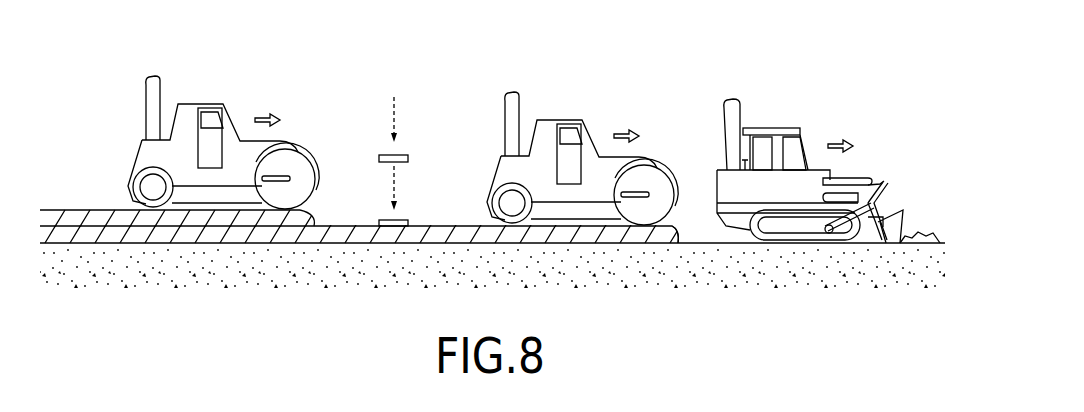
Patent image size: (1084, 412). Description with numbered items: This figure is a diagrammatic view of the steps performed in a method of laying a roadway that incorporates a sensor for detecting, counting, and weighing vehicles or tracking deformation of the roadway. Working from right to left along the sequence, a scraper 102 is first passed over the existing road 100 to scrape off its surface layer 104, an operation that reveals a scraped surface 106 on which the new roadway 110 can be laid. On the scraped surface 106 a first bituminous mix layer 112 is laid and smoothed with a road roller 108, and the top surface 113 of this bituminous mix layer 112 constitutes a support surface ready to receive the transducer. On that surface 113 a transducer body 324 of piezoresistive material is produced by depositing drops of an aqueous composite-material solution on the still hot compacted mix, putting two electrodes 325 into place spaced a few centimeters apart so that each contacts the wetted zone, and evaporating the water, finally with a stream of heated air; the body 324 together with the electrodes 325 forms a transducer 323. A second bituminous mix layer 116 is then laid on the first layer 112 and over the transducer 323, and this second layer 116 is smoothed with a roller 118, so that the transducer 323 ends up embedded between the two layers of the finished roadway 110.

The road 100 is at (683, 212).
The scraper 102 is at (778, 133).
The surface layer 104 is at (924, 224).
The scraped surface 106 is at (705, 246).
The road roller 108 is at (551, 121).
The new roadway 110 is at (68, 203).
The first bituminous mix layer 112 is at (465, 225).
The top surface 113 is at (425, 217).
The second bituminous mix layer 116 is at (106, 209).
The roller 118 is at (207, 102).
The transducer 323 is at (374, 215).
The transducer body 324 is at (378, 158).
The electrodes 325 is at (404, 97).